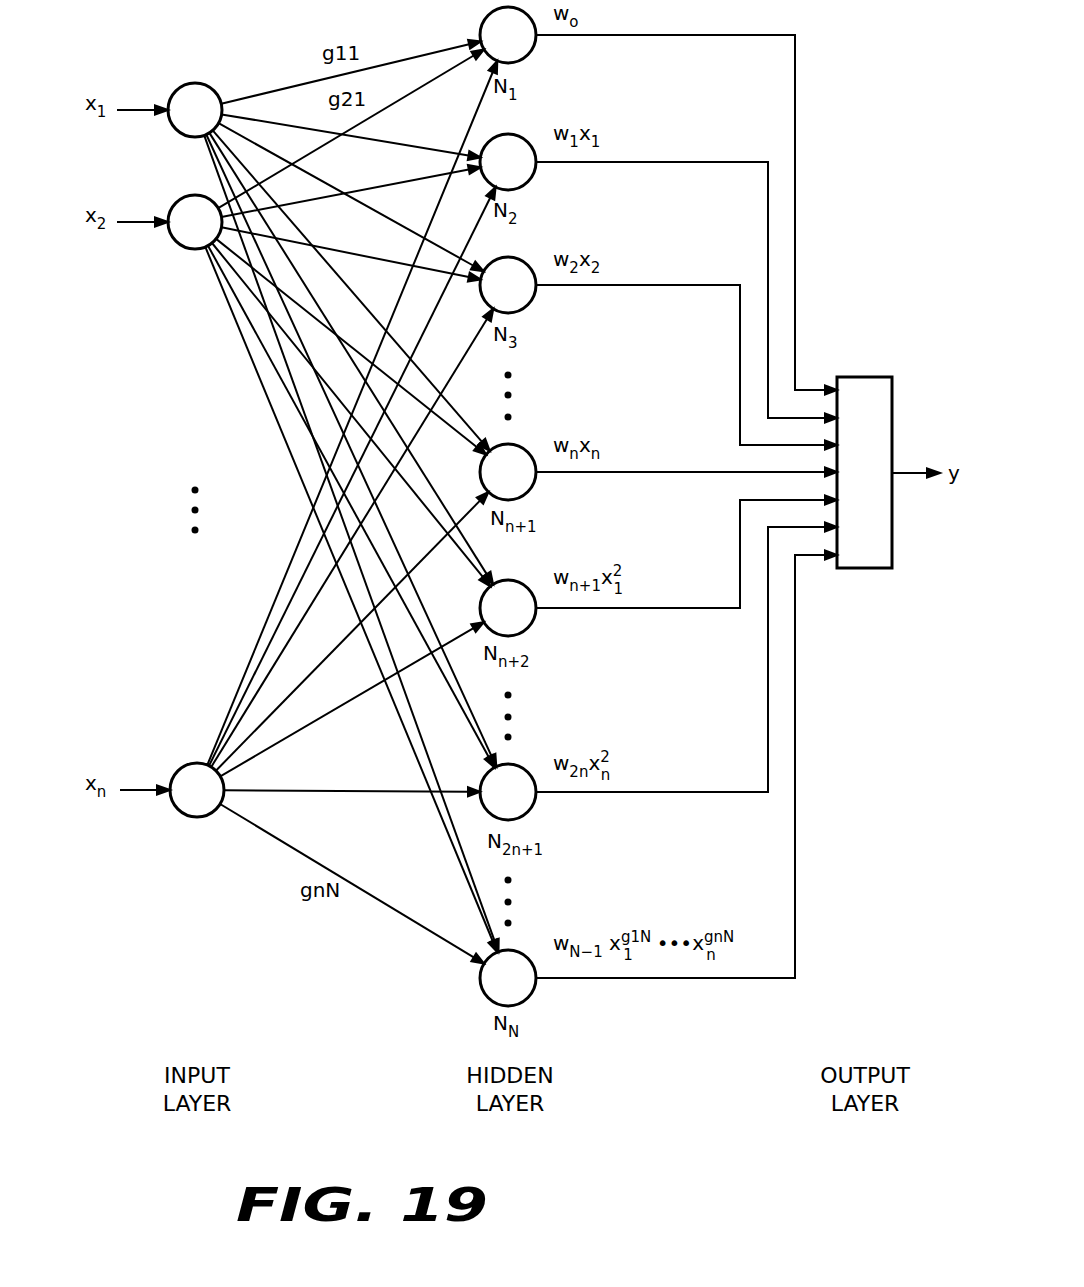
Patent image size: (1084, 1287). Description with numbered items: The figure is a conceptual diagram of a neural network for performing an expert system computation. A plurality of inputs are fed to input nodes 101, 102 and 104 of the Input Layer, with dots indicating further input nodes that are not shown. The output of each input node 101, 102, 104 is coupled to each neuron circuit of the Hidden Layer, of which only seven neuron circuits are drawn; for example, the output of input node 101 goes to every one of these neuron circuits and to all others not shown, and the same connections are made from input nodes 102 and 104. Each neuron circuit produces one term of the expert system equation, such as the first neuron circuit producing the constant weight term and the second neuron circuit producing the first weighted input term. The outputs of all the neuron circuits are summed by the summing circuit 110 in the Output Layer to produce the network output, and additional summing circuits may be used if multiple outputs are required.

The input node 101 is at (185, 84).
The input node 102 is at (183, 249).
The input node 104 is at (185, 817).
The summing circuit 110 is at (873, 376).